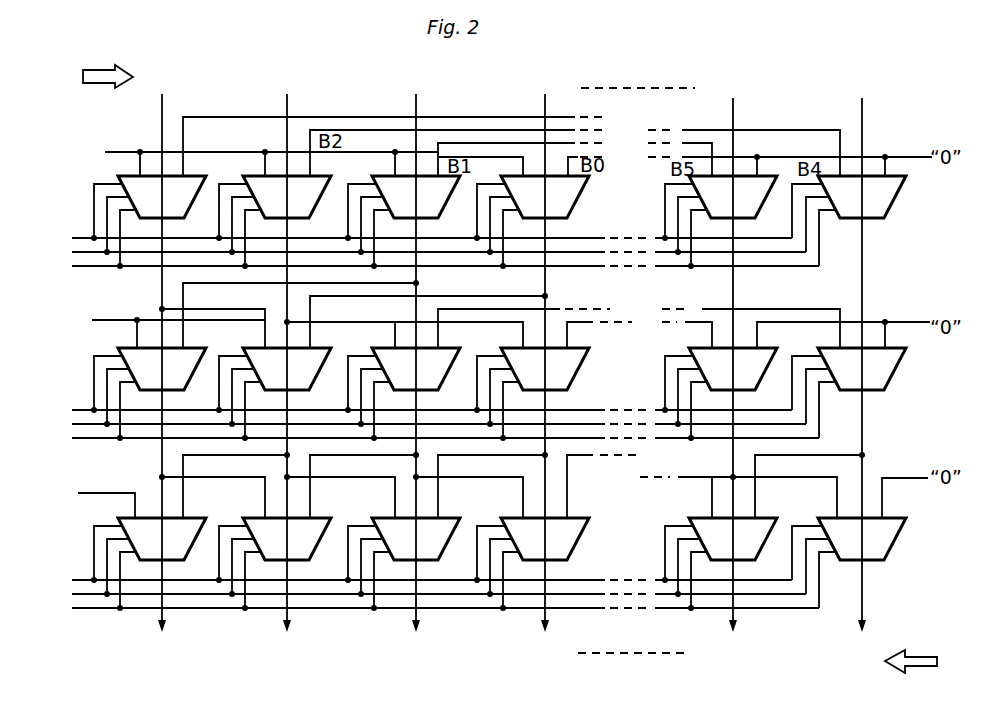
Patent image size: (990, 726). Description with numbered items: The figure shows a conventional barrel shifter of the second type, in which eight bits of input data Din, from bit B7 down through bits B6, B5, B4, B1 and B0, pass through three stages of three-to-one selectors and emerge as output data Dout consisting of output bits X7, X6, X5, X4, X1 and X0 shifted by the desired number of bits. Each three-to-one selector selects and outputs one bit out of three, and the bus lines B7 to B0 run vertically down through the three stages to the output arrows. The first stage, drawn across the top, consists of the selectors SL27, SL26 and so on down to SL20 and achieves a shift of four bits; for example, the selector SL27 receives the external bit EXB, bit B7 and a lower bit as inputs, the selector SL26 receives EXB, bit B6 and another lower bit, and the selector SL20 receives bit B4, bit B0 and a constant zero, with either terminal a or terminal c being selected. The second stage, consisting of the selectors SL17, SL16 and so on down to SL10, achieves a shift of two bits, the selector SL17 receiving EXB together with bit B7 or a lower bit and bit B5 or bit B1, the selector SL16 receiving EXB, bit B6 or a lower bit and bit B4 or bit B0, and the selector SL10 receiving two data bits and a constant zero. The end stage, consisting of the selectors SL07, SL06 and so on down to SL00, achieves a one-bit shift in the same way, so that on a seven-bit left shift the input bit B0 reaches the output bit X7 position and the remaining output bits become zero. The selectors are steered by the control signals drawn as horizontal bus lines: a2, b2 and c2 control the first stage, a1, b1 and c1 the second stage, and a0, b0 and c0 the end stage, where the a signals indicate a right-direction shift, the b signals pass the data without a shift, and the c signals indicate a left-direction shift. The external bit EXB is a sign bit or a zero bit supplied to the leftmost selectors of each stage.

The 3-1 selector SL27 is at (176, 186).
The 3-1 selector SL26 is at (304, 186).
The 3-1 selector SL20 is at (885, 197).
The 3-1 selector SL17 is at (175, 356).
The 3-1 selector SL16 is at (304, 356).
The 3-1 selector SL10 is at (884, 369).
The 3-1 selector SL07 is at (175, 526).
The 3-1 selector SL06 is at (304, 526).
The 3-1 selector SL00 is at (884, 540).
The input data bit B7 is at (156, 316).
The input data bit B6 is at (282, 316).
The input data bit B5 is at (411, 316).
The input data bit B4 is at (541, 316).
The input data bit B1 is at (736, 317).
The input data bit B0 is at (862, 317).
The output data bit X7 is at (161, 612).
The output data bit X6 is at (286, 612).
The output data bit X5 is at (414, 612).
The output data bit X4 is at (544, 612).
The output data bit X1 is at (733, 612).
The output data bit X0 is at (864, 612).
The control signal a2 is at (417, 236).
The control signal b2 is at (419, 250).
The control signal c2 is at (430, 265).
The control signal a1 is at (416, 405).
The control signal b1 is at (419, 420).
The control signal c1 is at (430, 436).
The control signal a0 is at (414, 575).
The control signal b0 is at (416, 590).
The control signal c0 is at (427, 608).
The external bit EXB is at (233, 330).
The input data Din is at (82, 79).
The output data Dout is at (932, 663).